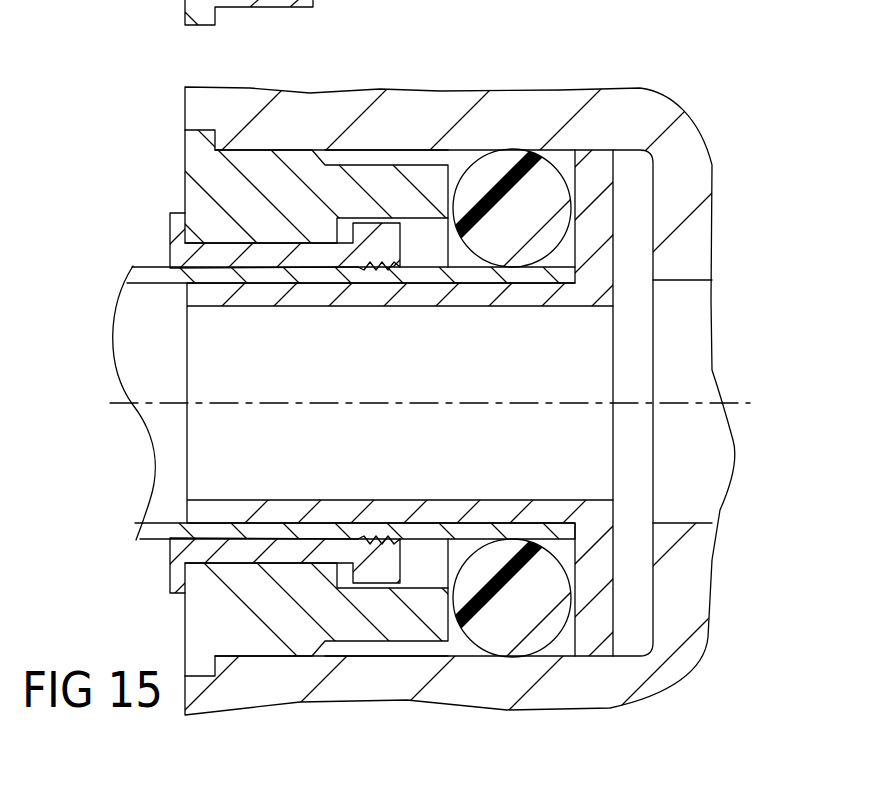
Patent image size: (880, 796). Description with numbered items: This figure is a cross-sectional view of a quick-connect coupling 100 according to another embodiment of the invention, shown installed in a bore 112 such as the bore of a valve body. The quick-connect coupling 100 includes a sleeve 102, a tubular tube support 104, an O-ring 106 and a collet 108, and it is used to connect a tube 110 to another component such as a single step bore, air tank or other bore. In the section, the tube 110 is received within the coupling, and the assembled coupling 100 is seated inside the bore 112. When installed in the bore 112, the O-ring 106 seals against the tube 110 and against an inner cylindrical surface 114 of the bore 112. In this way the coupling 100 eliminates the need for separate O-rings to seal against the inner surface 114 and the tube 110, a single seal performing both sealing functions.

The quick-connect coupling 100 is at (151, 96).
The sleeve 102 is at (380, 185).
The tubular tube support 104 is at (593, 223).
The O-ring 106 is at (498, 152).
The collet 108 is at (172, 228).
The tube 110 is at (128, 273).
The bore 112 is at (630, 440).
The inner cylindrical surface 114 is at (418, 150).